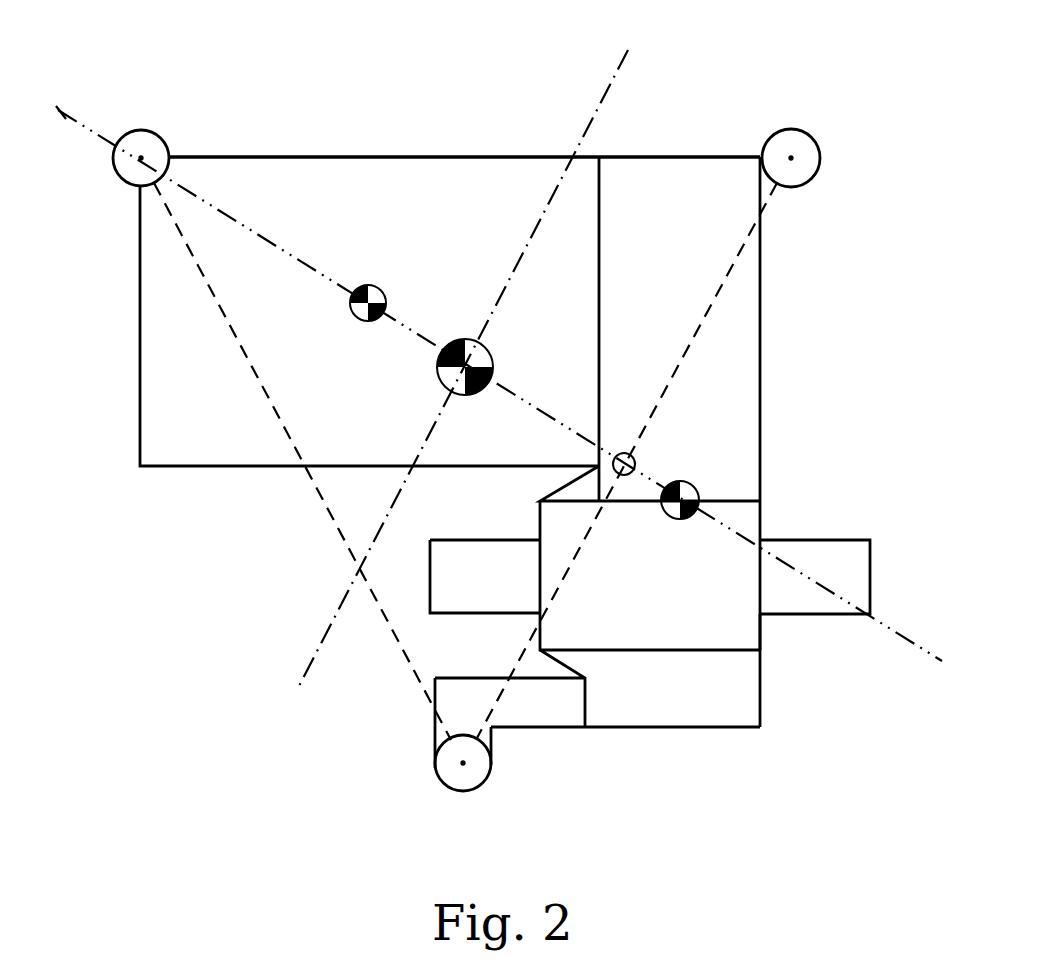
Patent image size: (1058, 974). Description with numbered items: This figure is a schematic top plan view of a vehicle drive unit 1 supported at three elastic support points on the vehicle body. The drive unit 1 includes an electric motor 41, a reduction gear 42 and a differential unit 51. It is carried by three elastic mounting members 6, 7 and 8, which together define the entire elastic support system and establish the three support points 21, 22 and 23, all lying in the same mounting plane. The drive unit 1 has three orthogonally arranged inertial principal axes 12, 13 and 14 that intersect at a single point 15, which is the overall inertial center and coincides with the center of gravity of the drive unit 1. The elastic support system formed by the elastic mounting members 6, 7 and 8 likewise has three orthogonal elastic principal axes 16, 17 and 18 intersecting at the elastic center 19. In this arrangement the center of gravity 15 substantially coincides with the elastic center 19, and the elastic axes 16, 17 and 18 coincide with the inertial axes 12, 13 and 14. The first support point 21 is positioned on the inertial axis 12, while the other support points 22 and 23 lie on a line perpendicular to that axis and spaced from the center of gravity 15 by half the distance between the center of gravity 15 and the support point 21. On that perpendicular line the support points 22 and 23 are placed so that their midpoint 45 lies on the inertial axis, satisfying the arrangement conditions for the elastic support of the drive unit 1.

The vehicle drive unit 1 is at (387, 157).
The elastic mounting member 6 is at (140, 132).
The elastic mounting member 7 is at (787, 130).
The elastic mounting member 8 is at (457, 792).
The inertial principal axis 12 is at (499, 343).
The elastic principal axis 16 is at (60, 110).
The inertial principal axis 13 is at (462, 370).
The elastic principal axis 17 is at (597, 108).
The inertial principal axis 14 is at (401, 349).
The elastic principal axis 18 is at (460, 370).
The inertial center 15 is at (583, 416).
The elastic center 19 is at (467, 338).
The support point 21 is at (142, 157).
The support point 22 is at (787, 157).
The support point 23 is at (460, 765).
The electric motor 41 is at (265, 157).
The reduction gear 42 is at (640, 157).
The midpoint 45 is at (633, 457).
The differential unit 51 is at (762, 630).